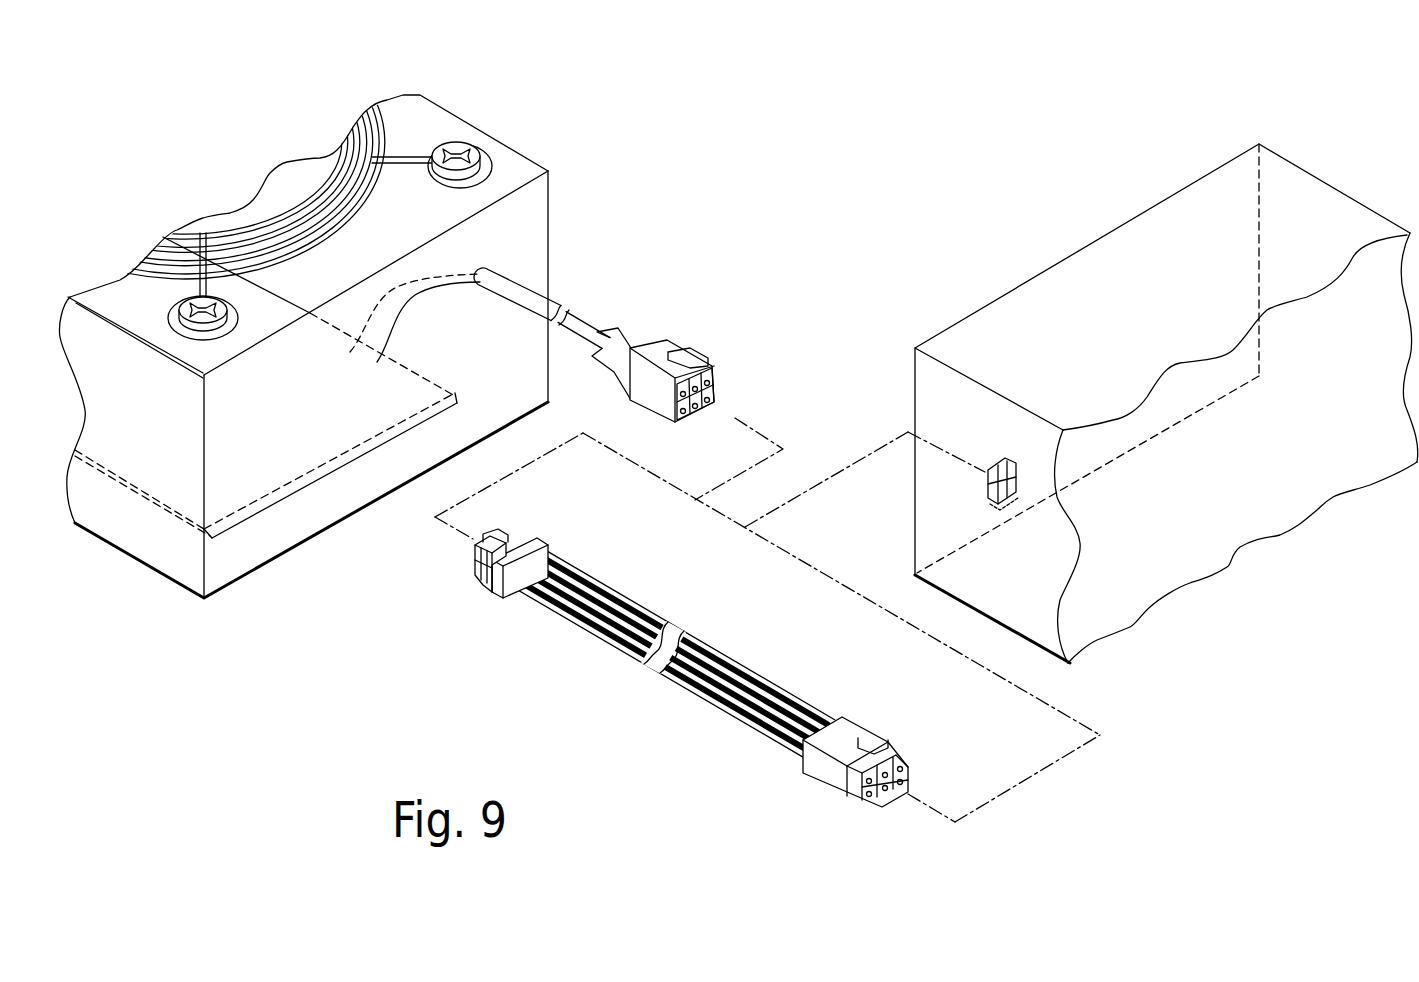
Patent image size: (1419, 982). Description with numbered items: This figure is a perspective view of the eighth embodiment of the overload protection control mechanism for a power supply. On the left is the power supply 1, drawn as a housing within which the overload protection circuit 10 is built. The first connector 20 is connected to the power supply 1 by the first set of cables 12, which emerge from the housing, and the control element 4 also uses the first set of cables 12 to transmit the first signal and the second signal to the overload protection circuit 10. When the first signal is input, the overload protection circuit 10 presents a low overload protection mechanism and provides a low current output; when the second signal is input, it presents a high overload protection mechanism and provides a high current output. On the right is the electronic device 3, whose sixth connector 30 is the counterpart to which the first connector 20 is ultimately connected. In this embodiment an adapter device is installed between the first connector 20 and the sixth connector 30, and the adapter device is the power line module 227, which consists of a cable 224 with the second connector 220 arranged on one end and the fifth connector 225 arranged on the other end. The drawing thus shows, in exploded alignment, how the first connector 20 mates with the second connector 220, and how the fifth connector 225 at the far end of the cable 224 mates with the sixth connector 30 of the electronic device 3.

The power supply 1 is at (345, 302).
The overload protection circuit 10 is at (327, 483).
The first set of cables 12 is at (528, 295).
The first connector 20 is at (678, 390).
The control element 4 is at (683, 420).
The electronic device 3 is at (1145, 403).
The sixth connector 30 is at (984, 490).
The second connector 220 is at (494, 598).
The cable 224 is at (660, 671).
The power line module 227 is at (698, 704).
The fifth connector 225 is at (818, 774).